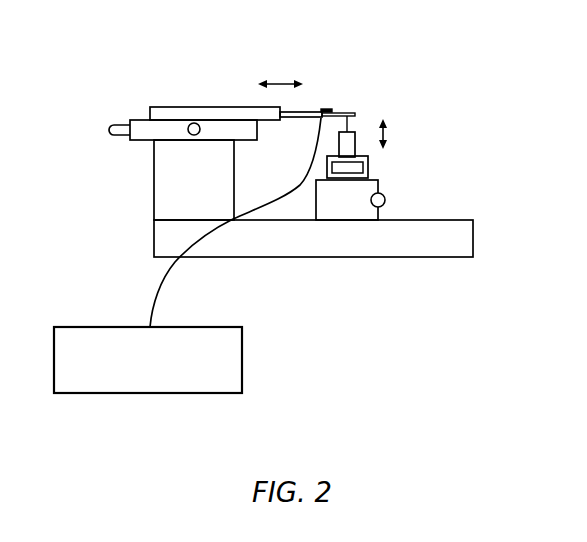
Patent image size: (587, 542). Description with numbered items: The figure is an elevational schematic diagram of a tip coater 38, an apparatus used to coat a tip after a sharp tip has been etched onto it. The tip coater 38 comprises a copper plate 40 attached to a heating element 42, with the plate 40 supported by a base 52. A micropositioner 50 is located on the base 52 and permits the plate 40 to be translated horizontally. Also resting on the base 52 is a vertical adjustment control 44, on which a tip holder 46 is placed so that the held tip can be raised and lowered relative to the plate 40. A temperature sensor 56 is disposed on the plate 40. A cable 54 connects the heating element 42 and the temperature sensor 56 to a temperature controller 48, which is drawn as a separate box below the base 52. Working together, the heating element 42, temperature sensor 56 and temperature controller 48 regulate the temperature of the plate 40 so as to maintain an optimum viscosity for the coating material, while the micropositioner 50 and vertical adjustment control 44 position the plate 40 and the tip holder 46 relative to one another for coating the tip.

The tip coater 38 is at (463, 94).
The copper plate 40 is at (352, 112).
The heating element 42 is at (303, 109).
The vertical adjustment control 44 is at (385, 198).
The tip holder 46 is at (368, 165).
The temperature controller 48 is at (147, 393).
The micropositioner 50 is at (192, 122).
The base 52 is at (154, 235).
The cable 54 is at (154, 300).
The temperature sensor 56 is at (330, 108).